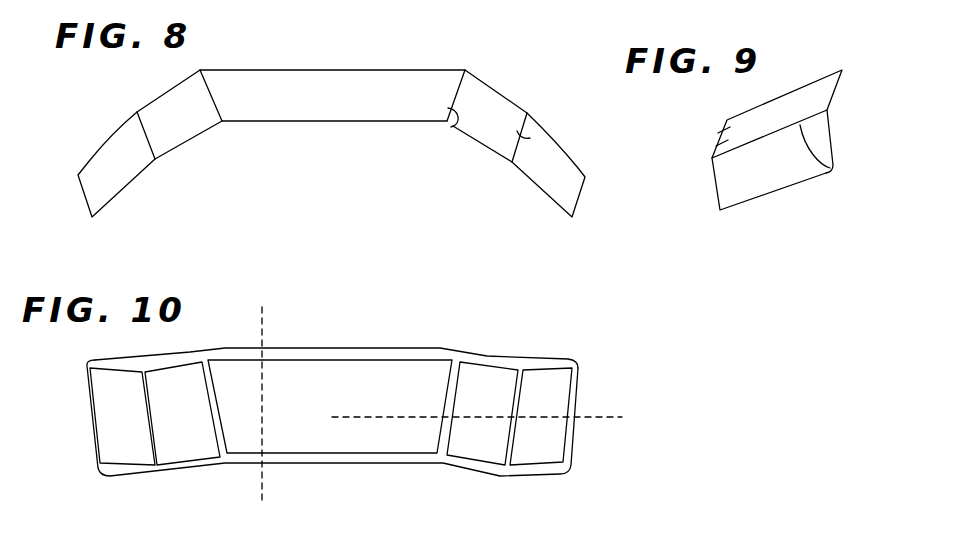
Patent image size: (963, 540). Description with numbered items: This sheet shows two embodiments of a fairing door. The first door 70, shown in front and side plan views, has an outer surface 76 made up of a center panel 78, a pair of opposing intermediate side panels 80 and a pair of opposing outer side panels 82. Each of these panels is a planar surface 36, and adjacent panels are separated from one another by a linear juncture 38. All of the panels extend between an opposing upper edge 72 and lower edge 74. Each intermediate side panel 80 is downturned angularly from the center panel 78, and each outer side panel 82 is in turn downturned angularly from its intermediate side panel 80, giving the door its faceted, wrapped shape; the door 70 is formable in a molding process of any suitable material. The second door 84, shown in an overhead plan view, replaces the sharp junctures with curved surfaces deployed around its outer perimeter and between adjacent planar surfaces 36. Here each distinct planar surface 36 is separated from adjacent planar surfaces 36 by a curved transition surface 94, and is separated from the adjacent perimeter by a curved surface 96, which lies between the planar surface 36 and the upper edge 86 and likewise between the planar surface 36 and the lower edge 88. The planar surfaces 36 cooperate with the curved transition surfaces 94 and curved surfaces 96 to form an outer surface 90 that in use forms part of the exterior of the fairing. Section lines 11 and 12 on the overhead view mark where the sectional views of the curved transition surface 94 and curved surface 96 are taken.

In FIG. 10, the section line 11- 11 is at (595, 437).
In FIG. 10, the section line 12- 12 is at (242, 328).
In FIG. 8, the planar surface 36 is at (380, 85).
In FIG. 9, the planar surface 36 is at (718, 148).
In FIG. 10, the planar surface 36 is at (185, 380).
In FIG. 8, the linear juncture 38 is at (456, 125).
In FIG. 9, the linear juncture 38 is at (777, 102).
In FIG. 8, the door 70 is at (436, 28).
In FIG. 9, the door 70 is at (804, 222).
In FIG. 8, the upper edge 72 is at (313, 68).
In FIG. 9, the upper edge 72 is at (845, 72).
In FIG. 8, the lower edge 74 is at (380, 122).
In FIG. 9, the lower edge 74 is at (712, 178).
In FIG. 8, the outer surface 76 is at (275, 103).
In FIG. 9, the outer surface 76 is at (722, 127).
In FIG. 8, the center panel 78 is at (328, 105).
In FIG. 8, the intermediate side panel 80 is at (482, 132).
In FIG. 9, the intermediate side panel 80 is at (717, 145).
In FIG. 8, the outer side panel 82 is at (542, 172).
In FIG. 9, the outer side panel 82 is at (735, 195).
In FIG. 10, the door 84 is at (515, 323).
In FIG. 10, the upper edge 86 is at (417, 348).
In FIG. 10, the lower edge 88 is at (367, 467).
In FIG. 10, the outer surface 90 is at (343, 443).
In FIG. 10, the curved transition surface 94 is at (148, 418).
In FIG. 10, the curved surface 96 is at (490, 362).